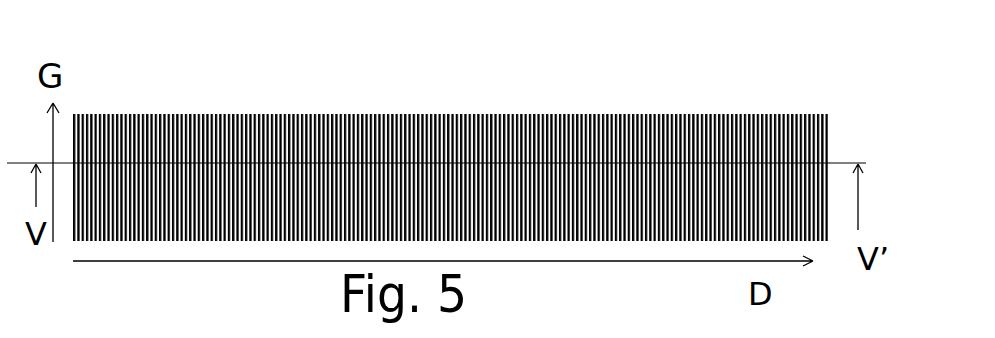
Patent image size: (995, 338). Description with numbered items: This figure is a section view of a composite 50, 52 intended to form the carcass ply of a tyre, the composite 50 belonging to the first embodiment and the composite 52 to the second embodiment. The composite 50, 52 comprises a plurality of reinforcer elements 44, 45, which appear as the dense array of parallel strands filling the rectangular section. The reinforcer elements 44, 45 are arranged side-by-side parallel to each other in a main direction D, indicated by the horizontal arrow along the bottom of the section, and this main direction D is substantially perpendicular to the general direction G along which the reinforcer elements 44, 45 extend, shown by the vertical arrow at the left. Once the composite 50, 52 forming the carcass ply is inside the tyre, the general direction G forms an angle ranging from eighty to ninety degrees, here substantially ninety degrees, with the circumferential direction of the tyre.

The reinforcer element 44 is at (451, 124).
The reinforcer element 45 is at (451, 124).
The composite 50 is at (451, 124).
The composite 52 is at (451, 177).